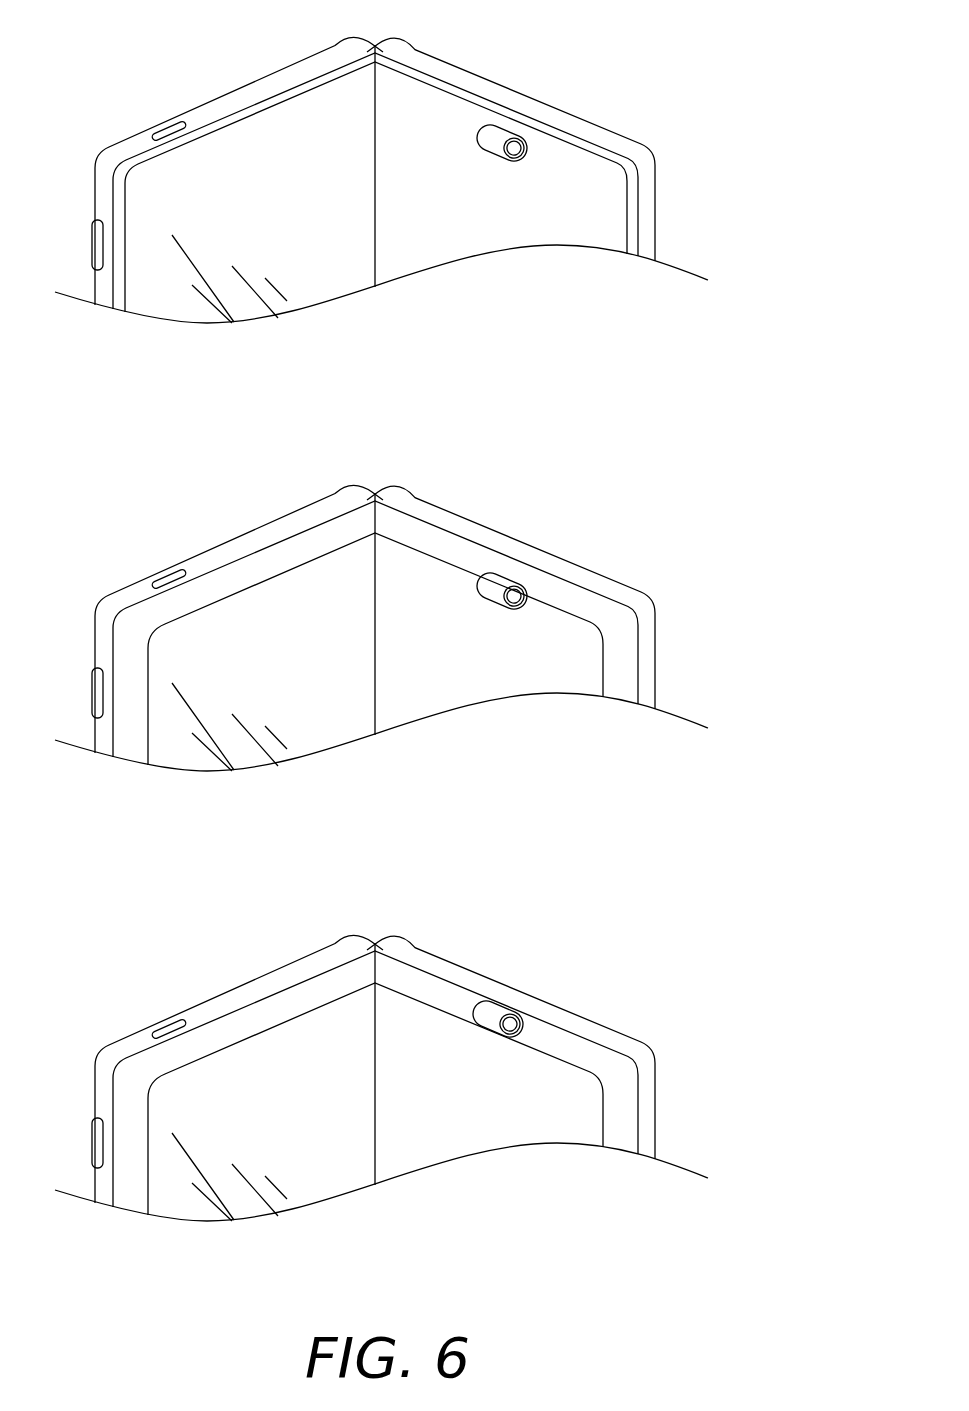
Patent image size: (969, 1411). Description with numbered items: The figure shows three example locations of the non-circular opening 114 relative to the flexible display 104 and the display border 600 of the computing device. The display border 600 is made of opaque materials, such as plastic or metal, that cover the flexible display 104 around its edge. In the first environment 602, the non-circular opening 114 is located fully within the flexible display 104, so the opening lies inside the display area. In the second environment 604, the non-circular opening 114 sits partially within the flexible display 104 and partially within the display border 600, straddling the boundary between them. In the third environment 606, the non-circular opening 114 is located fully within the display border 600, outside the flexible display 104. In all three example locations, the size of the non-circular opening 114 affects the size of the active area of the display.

The display border 600 is at (296, 89).
The flexible display 104 is at (163, 153).
The non-circular opening 114 is at (493, 154).
The environment 602 is at (555, 42).
The environment 604 is at (381, 614).
The environment 606 is at (381, 1064).